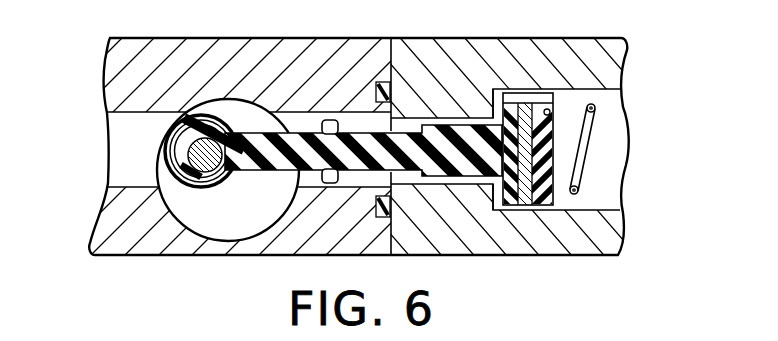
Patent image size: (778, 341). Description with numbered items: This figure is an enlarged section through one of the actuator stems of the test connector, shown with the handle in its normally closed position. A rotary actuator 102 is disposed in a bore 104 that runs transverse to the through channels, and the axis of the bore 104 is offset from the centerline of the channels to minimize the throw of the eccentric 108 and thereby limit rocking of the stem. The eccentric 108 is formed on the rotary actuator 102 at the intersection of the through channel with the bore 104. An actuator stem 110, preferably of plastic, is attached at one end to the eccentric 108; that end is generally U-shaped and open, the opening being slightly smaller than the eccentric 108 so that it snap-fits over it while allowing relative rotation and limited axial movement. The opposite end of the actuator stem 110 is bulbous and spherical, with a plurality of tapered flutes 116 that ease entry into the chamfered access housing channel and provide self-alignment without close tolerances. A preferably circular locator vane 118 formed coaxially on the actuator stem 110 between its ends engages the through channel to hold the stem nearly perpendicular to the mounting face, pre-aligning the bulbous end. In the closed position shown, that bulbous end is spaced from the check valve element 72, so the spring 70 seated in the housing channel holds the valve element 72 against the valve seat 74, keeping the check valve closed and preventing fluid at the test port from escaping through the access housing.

The spring 70 is at (590, 130).
The valve element 72 is at (555, 163).
The valve seat 74 is at (498, 188).
The rotary actuator 102 is at (206, 222).
The bore 104 is at (182, 207).
The eccentric 108 is at (195, 150).
The actuator stem 110 is at (397, 117).
The tapered flutes 116 is at (469, 110).
The locator vane 118 is at (338, 120).